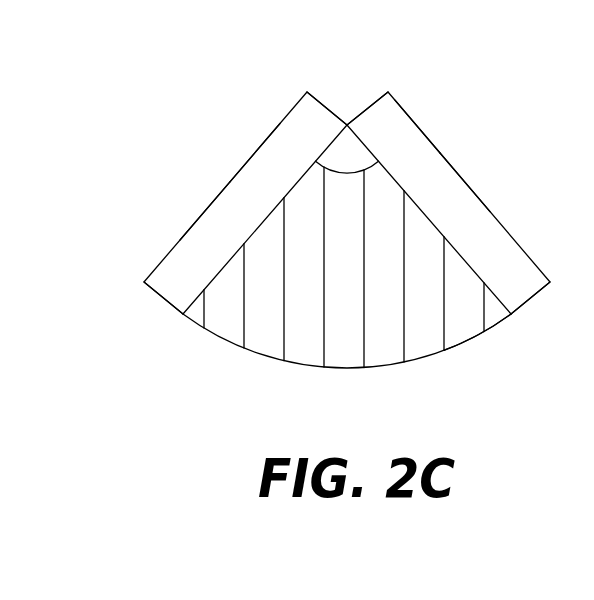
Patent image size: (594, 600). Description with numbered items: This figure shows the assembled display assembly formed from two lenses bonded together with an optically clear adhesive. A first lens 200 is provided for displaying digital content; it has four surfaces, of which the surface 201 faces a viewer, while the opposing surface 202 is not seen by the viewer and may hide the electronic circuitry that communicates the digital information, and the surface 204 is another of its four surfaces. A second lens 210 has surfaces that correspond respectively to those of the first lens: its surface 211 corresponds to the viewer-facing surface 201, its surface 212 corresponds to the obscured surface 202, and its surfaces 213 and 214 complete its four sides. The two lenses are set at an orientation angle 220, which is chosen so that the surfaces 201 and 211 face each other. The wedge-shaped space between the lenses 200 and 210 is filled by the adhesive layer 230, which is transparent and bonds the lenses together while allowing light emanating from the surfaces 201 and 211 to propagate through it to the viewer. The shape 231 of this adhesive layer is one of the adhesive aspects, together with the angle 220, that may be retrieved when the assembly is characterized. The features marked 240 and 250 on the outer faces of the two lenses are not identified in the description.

The first lens 200 is at (321, 143).
The second lens 210 is at (520, 286).
The surface of second lens 214 is at (362, 110).
The outer surface of first portion 240 is at (247, 162).
The opposing surface 202 is at (207, 208).
The surface of second lens 212 is at (416, 125).
The outer surface of second portion 250 is at (462, 178).
The orientation angle 220 is at (347, 173).
The surface 201 is at (207, 288).
The surface of second lens 211 is at (440, 236).
The surface 204 is at (165, 300).
The surface of second lens 213 is at (527, 303).
The shape 231 is at (330, 370).
The adhesive layer 230 is at (495, 325).